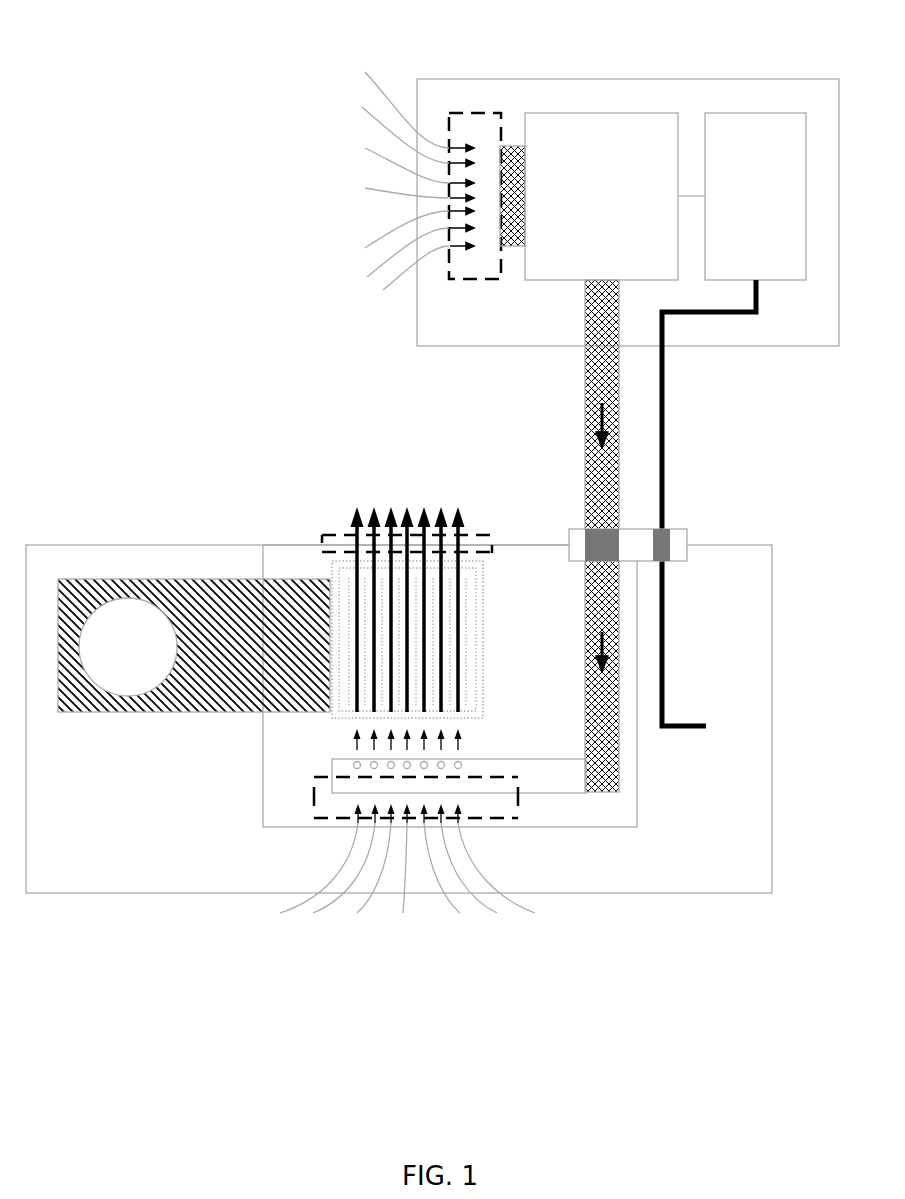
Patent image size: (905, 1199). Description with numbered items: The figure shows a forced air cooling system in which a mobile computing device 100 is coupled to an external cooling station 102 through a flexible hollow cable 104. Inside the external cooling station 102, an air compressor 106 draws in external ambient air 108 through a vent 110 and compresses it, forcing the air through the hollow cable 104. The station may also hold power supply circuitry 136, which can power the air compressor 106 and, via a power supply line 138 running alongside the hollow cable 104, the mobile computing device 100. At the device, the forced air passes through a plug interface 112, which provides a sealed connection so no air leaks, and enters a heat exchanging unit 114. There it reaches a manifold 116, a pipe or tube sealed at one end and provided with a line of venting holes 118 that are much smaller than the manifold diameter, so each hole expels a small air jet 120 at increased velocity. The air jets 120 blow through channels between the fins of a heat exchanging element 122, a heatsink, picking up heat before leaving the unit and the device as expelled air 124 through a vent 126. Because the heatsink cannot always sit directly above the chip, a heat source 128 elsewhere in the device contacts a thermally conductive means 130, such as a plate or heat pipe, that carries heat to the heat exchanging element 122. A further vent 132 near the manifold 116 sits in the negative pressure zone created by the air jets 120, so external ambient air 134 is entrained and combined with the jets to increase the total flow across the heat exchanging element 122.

The mobile computing device 100 is at (59, 893).
The external cooling station 102 is at (595, 79).
The hollow cable 104 is at (538, 467).
The air compressor 106 is at (586, 216).
The external ambient air 108 is at (310, 204).
The vent 110 is at (460, 326).
The plug interface 112 is at (688, 529).
The heat exchanging unit 114 is at (600, 827).
The manifold 116 is at (503, 759).
The venting holes 118 is at (345, 755).
The air jet 120 is at (467, 743).
The heat exchanging element 122 is at (325, 561).
The expelled air 124 is at (375, 501).
The vent 126 is at (485, 535).
The heat source 128 is at (113, 677).
The thermally conductive means 130 is at (230, 579).
The vent 132 is at (313, 818).
The external ambient air 134 is at (402, 981).
The power supply circuitry 136 is at (741, 227).
The power supply line 138 is at (687, 446).